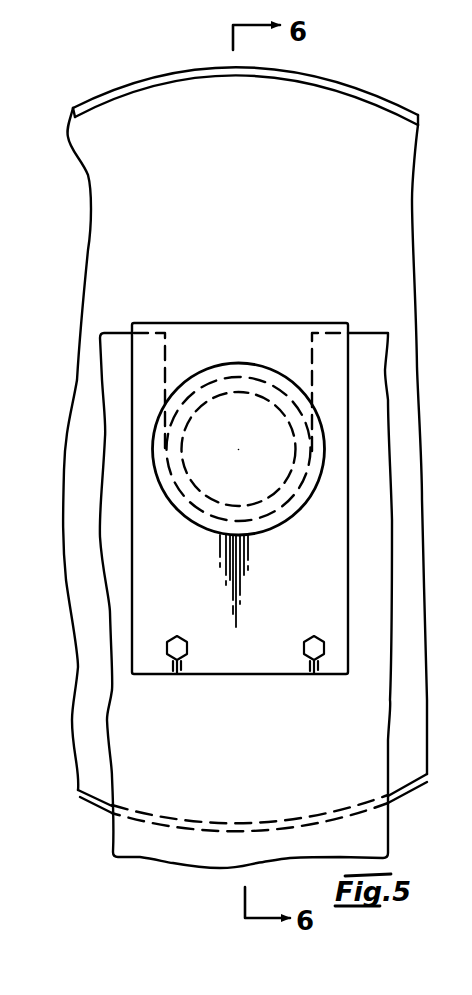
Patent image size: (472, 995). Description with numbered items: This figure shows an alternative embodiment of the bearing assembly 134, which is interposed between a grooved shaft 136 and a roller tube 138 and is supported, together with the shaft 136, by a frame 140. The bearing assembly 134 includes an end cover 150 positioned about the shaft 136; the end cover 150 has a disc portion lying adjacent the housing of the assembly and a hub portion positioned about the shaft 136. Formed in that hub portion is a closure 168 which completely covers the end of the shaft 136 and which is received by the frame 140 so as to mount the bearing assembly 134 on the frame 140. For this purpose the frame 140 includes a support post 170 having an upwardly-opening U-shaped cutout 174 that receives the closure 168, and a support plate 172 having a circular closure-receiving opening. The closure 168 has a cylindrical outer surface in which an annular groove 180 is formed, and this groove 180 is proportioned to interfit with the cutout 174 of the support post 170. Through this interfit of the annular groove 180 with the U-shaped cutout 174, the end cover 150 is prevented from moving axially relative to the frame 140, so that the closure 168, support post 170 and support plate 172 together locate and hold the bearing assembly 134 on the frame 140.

The bearing assembly 134 is at (392, 91).
The grooved shaft 136 is at (268, 388).
The roller tube 138 is at (313, 78).
The frame 140 is at (140, 847).
The end cover 150 is at (120, 186).
The closure 168 is at (263, 520).
The support post 170 is at (373, 834).
The support plate 172 is at (333, 322).
The U-shaped cutout 174 is at (183, 328).
The annular groove 180 is at (213, 380).